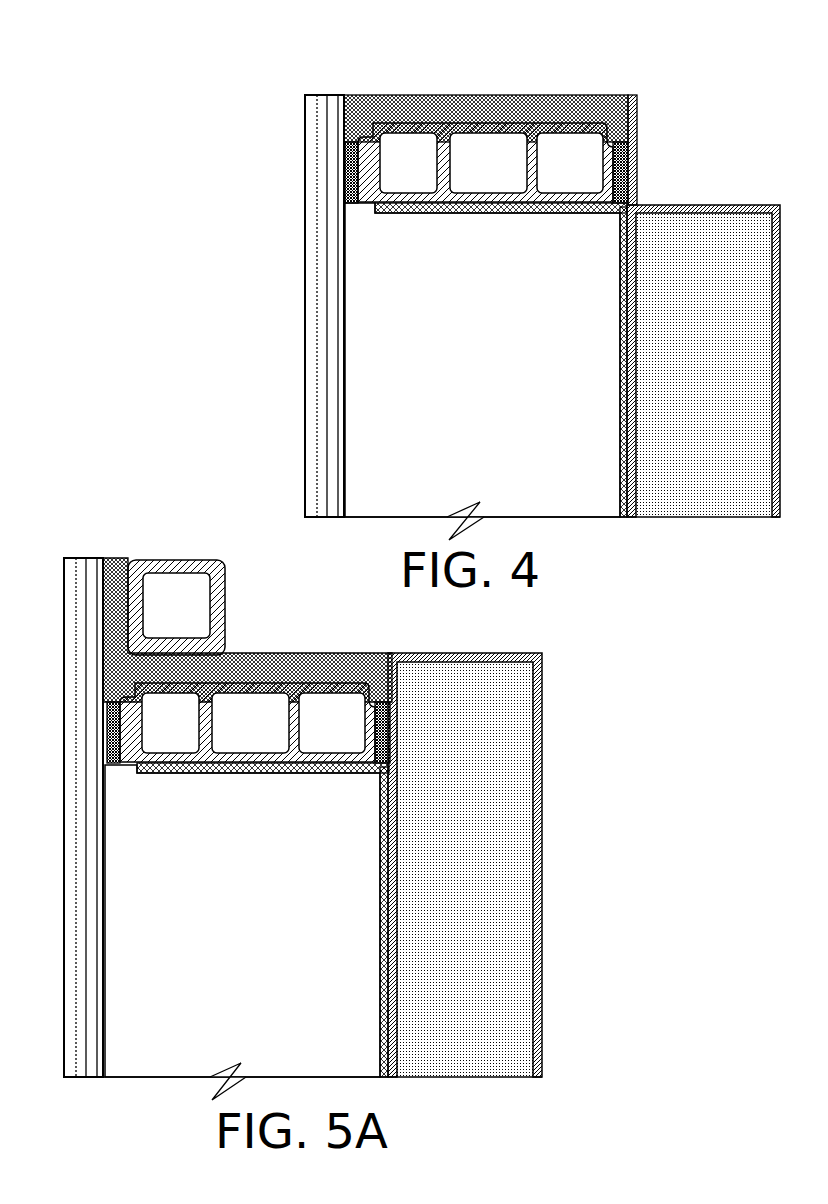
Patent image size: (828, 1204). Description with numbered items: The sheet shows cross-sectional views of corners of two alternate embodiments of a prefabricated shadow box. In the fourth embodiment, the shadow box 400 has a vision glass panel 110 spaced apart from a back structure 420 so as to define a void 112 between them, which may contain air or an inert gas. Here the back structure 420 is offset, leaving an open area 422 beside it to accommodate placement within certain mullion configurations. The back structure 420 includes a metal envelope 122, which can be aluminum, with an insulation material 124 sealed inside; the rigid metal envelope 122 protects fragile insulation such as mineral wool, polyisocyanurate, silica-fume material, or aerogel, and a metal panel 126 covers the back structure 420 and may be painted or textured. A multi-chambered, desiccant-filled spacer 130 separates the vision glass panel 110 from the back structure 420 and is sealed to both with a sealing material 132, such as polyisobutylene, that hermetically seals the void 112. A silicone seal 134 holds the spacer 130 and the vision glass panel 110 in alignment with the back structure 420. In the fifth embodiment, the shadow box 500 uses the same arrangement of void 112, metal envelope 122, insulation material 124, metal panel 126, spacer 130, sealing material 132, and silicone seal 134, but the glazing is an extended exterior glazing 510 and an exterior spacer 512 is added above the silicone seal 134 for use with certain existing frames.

In FIG. 4, the shadow box 400 is at (289, 88).
In FIG. 4, the vision glass panel 110 is at (310, 410).
In FIG. 4, the void 112 is at (493, 370).
In FIG. 5A, the void 112 is at (255, 930).
In FIG. 4, the metal envelope 122 is at (780, 285).
In FIG. 5A, the metal envelope 122 is at (558, 812).
In FIG. 4, the insulation material 124 is at (713, 360).
In FIG. 5A, the insulation material 124 is at (472, 920).
In FIG. 4, the metal panel 126 is at (620, 418).
In FIG. 5A, the metal panel 126 is at (382, 977).
In FIG. 4, the spacer 130 is at (443, 133).
In FIG. 5A, the spacer 130 is at (261, 690).
In FIG. 4, the sealing material 132 is at (352, 207).
In FIG. 5A, the sealing material 132 is at (114, 767).
In FIG. 4, the silicone seal 134 is at (530, 103).
In FIG. 5A, the silicone seal 134 is at (113, 568).
In FIG. 4, the back structure 420 is at (727, 205).
In FIG. 4, the cavity 422 is at (718, 153).
In FIG. 5A, the shadow box 500 is at (49, 556).
In FIG. 5A, the extended exterior glazing 510 is at (68, 890).
In FIG. 5A, the exterior spacer 512 is at (172, 568).